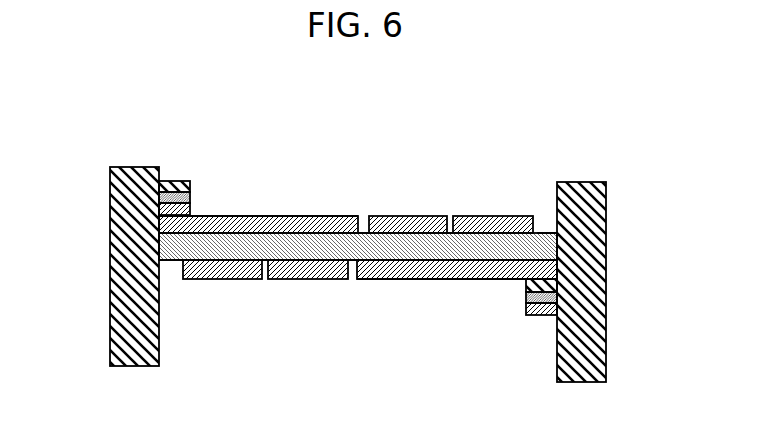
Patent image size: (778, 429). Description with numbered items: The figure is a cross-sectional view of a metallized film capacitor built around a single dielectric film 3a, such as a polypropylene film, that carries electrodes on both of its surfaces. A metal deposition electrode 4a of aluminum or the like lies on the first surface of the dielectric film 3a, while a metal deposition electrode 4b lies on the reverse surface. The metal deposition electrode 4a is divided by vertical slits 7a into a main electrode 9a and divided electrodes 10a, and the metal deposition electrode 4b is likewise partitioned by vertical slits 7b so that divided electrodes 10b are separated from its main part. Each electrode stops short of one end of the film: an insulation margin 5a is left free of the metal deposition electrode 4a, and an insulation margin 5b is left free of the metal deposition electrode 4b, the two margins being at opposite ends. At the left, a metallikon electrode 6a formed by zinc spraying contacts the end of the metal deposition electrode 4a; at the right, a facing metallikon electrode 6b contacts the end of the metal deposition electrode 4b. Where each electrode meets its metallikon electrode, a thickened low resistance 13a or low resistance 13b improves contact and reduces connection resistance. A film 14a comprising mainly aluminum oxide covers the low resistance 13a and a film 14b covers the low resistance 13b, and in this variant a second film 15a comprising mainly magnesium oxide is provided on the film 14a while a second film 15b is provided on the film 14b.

The dielectric film 3a is at (330, 242).
The metal deposition electrode 4a is at (272, 220).
The metal deposition electrode 4b is at (389, 272).
The insulation margin 5a is at (537, 252).
The insulation margin 5b is at (168, 250).
The metallikon electrode 6a is at (118, 232).
The metallikon electrode 6b is at (603, 235).
The vertical slits 7a is at (363, 223).
The vertical slits 7b is at (265, 276).
The main electrode 9a is at (342, 216).
The divided electrodes 10a is at (427, 216).
The divided electrodes 10b is at (300, 278).
The low resistance 13a is at (137, 190).
The low resistance 13b is at (557, 282).
The film 14a is at (155, 200).
The film 14b is at (557, 295).
The second film 15a is at (185, 182).
The second film 15b is at (540, 305).